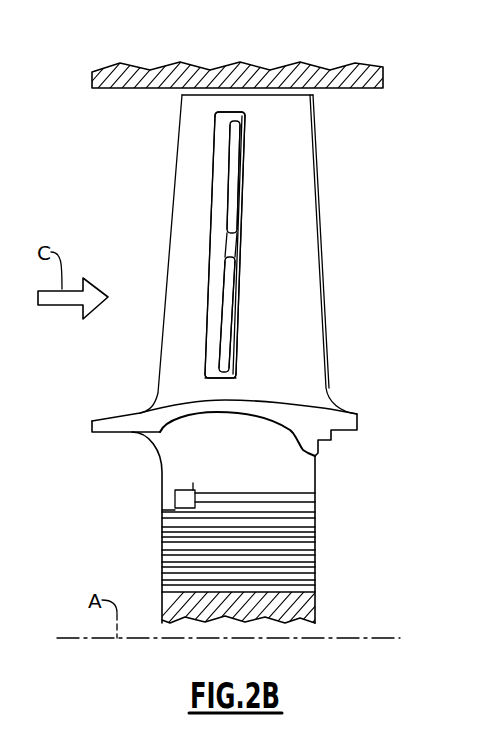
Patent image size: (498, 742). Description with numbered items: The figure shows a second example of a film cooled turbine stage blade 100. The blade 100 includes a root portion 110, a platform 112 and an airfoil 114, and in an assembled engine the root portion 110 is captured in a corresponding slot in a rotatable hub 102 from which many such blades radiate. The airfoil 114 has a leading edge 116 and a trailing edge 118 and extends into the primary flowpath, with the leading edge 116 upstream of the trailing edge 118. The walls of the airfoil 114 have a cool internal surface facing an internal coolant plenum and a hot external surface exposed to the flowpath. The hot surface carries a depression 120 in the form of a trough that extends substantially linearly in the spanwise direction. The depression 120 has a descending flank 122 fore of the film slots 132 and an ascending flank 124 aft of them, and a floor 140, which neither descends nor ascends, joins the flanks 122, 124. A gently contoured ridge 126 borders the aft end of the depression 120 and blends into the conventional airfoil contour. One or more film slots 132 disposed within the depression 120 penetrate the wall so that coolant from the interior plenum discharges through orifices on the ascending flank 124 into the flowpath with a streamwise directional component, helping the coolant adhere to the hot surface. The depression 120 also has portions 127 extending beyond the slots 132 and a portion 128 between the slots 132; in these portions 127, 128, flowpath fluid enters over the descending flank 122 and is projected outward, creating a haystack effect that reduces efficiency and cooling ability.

The turbine stage blade 100 is at (82, 123).
The rotatable hub 102 is at (315, 605).
The root portion 110 is at (315, 548).
The platform 112 is at (357, 414).
The airfoil 114 is at (248, 225).
The leading edge 116 is at (168, 270).
The trailing edge 118 is at (322, 218).
The depression 120 is at (217, 208).
The descending flank 122 is at (208, 251).
The ascending flank 124 is at (242, 175).
The ridge 126 is at (243, 208).
The portions of the depression extending beyond the film slots 127 is at (228, 117).
The portions of the depression between the film slots 128 is at (228, 252).
The film slot 132 is at (233, 145).
The floor 140 is at (210, 327).